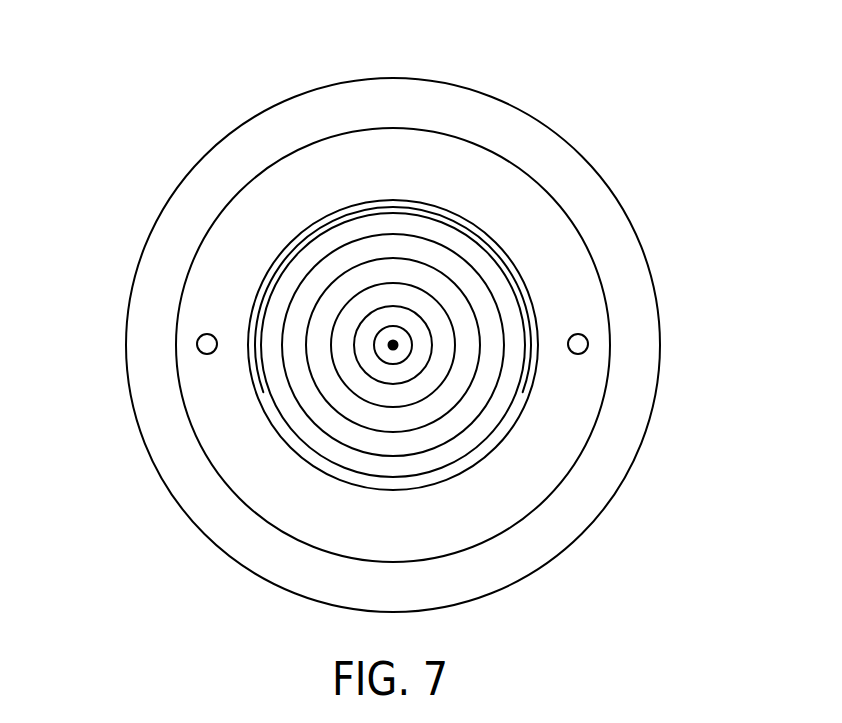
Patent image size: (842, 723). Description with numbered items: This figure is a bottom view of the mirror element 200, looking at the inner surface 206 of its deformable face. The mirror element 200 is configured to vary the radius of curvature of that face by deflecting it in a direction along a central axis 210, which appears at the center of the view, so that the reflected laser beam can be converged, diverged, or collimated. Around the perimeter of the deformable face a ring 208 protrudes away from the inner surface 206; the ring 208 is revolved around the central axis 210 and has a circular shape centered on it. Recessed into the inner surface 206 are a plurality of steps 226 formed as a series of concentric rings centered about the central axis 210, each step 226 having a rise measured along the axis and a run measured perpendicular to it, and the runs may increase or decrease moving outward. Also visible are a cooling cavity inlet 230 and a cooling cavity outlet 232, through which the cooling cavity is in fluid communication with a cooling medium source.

The mirror element 200 is at (699, 212).
The inner surface 206 is at (538, 220).
The ring 208 is at (590, 492).
The central axis 210 is at (392, 352).
The steps 226 is at (117, 278).
The cooling cavity inlet 230 is at (203, 345).
The cooling cavity outlet 232 is at (580, 343).